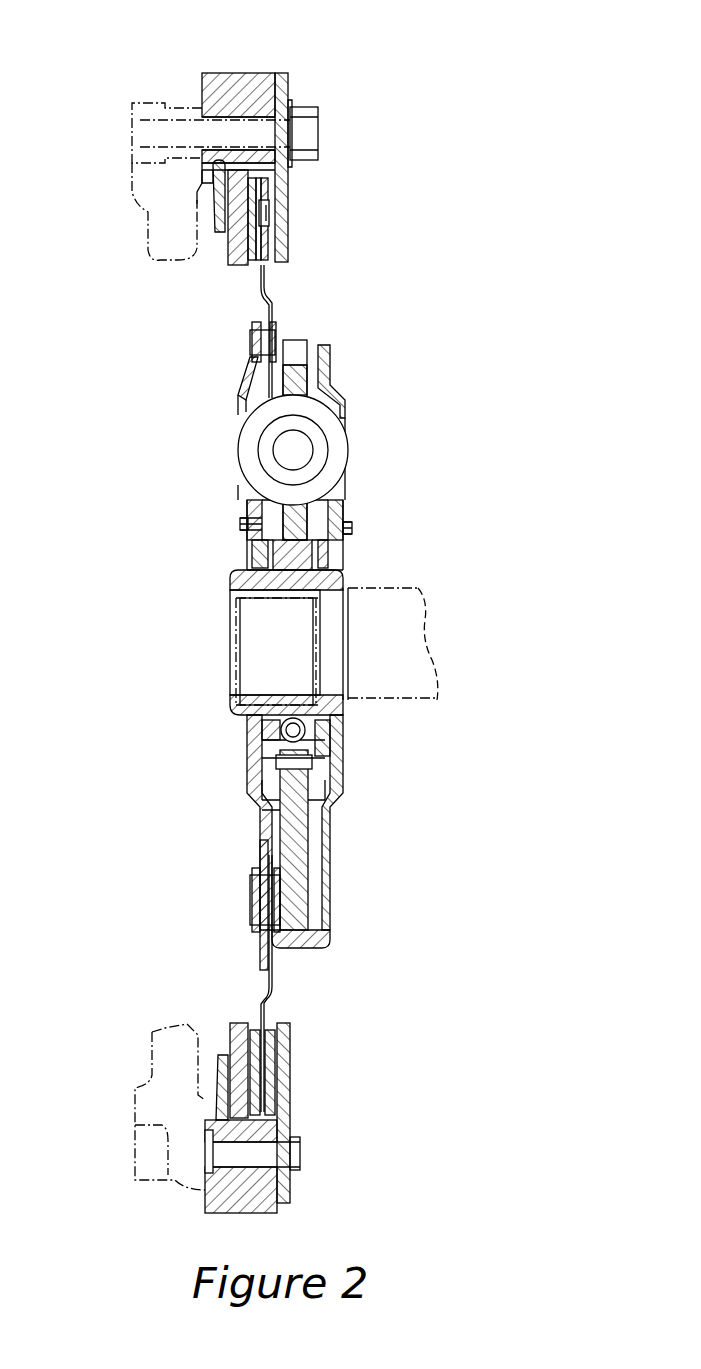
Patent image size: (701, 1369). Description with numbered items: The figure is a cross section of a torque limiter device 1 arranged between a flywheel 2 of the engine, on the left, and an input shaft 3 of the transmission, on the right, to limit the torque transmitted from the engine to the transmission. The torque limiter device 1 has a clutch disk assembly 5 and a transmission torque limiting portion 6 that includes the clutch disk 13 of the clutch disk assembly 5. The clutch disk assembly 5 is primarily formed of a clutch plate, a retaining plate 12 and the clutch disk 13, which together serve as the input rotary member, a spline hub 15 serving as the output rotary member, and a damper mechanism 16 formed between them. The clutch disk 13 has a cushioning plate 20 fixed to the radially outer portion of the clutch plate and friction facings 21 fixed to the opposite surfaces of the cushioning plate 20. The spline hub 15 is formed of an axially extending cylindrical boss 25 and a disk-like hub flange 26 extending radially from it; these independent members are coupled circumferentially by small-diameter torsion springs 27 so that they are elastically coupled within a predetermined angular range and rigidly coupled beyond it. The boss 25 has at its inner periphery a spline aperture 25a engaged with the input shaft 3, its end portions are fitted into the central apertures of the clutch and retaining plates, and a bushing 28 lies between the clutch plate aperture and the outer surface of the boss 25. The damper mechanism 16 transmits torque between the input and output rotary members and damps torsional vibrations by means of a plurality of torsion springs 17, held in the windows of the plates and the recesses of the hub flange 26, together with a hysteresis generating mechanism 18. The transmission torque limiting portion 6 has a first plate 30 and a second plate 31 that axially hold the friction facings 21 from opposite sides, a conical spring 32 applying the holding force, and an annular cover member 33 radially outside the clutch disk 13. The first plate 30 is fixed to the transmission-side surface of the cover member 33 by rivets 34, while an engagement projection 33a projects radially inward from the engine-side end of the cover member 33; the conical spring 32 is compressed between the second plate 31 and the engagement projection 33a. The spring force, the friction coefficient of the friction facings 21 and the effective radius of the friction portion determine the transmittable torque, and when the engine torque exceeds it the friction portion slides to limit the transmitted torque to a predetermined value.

The torque limiter device 1 is at (453, 282).
The flywheel 2 is at (143, 190).
The input shaft 3 is at (412, 597).
The clutch disk assembly 5 is at (307, 318).
The transmission torque limiting portion 6 is at (297, 187).
The retaining plate 12 is at (343, 377).
The clutch disk 13 is at (238, 272).
The spline hub 15 is at (205, 573).
The damper mechanism 16 is at (358, 442).
The torsion springs 17 is at (330, 472).
The hysteresis generating mechanism 18 is at (263, 510).
The cushioning plate 20 is at (265, 292).
The friction facings 21 is at (278, 258).
The boss 25 is at (233, 583).
The spline aperture 25a is at (260, 593).
The hub flange 26 is at (300, 348).
The torsion springs 27 is at (248, 779).
The bushing 28 is at (268, 727).
The first plate 30 is at (285, 87).
The second plate 31 is at (230, 247).
The conical spring 32 is at (207, 173).
The cover member 33 is at (245, 82).
The engagement projection 33a is at (197, 207).
The rivets 34 is at (300, 1137).